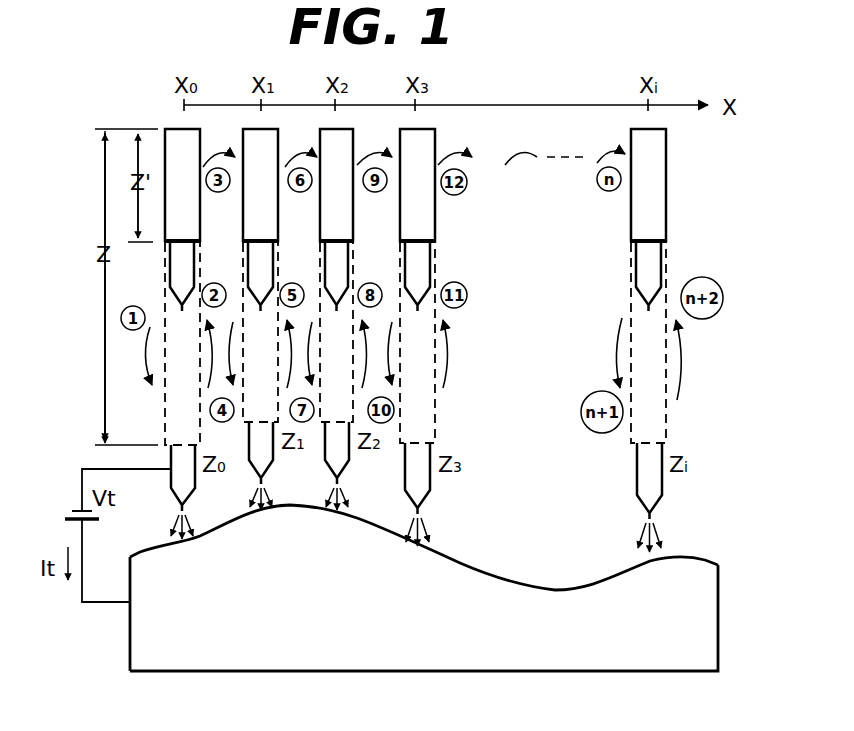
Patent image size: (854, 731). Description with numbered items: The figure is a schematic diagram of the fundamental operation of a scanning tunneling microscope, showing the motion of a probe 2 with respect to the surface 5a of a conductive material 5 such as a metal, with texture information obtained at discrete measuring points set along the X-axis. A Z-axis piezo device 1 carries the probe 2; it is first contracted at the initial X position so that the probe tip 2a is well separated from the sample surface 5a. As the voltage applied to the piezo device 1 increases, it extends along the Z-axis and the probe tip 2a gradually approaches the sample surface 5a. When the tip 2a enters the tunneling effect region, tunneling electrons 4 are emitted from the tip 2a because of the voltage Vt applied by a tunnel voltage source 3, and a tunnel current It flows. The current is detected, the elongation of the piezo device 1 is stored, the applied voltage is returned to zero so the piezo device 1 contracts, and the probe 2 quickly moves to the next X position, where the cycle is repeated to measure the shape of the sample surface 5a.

The Z-axis piezo device 1 is at (178, 138).
The probe 2 is at (177, 268).
The probe tip 2a is at (187, 510).
The tunnel voltage source 3 is at (65, 511).
The tunneling electrons 4 is at (172, 530).
The conductive material 5 is at (403, 588).
The sample surface 5a is at (462, 563).